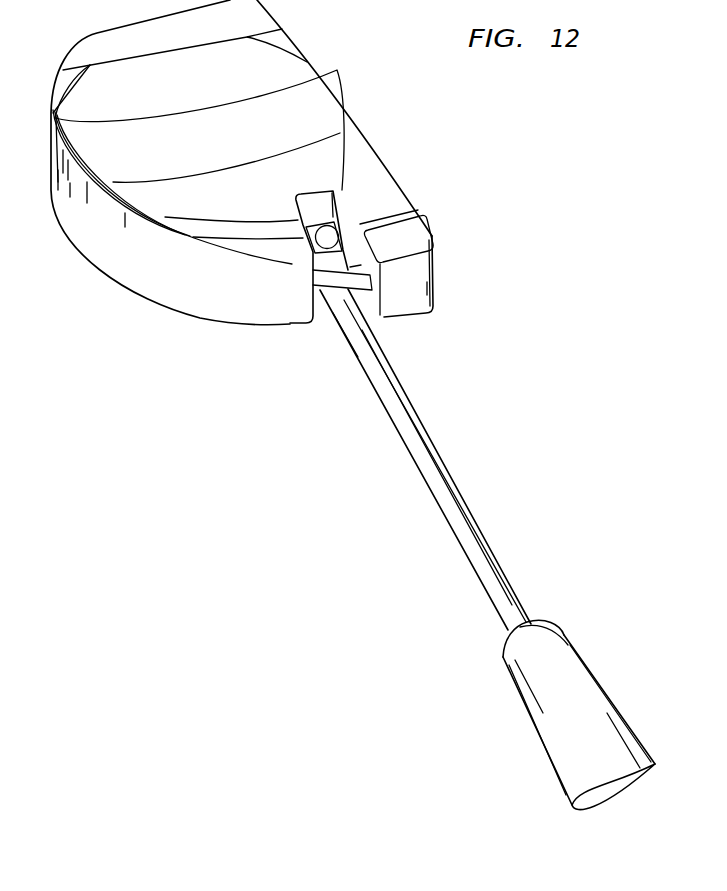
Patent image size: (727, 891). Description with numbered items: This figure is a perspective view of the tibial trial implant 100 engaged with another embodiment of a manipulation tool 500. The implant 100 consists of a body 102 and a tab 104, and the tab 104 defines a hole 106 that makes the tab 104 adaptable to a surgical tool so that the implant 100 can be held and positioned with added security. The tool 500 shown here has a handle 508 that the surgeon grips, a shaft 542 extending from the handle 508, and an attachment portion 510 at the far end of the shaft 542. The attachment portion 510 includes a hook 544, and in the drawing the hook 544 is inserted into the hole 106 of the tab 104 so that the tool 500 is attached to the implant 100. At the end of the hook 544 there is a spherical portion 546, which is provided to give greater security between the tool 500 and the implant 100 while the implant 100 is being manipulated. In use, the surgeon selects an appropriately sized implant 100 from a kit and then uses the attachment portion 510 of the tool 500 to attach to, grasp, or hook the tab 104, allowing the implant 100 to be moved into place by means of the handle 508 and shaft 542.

The tibial trial implant 100 is at (398, 152).
The body 102 is at (296, 75).
The tab 104 is at (385, 317).
The hole 106 is at (338, 230).
The tool 500 is at (538, 561).
The handle 508 is at (592, 704).
The attachment portion 510 is at (328, 340).
The shaft 542 is at (432, 464).
The hook 544 is at (308, 227).
The spherical portion 546 is at (333, 235).